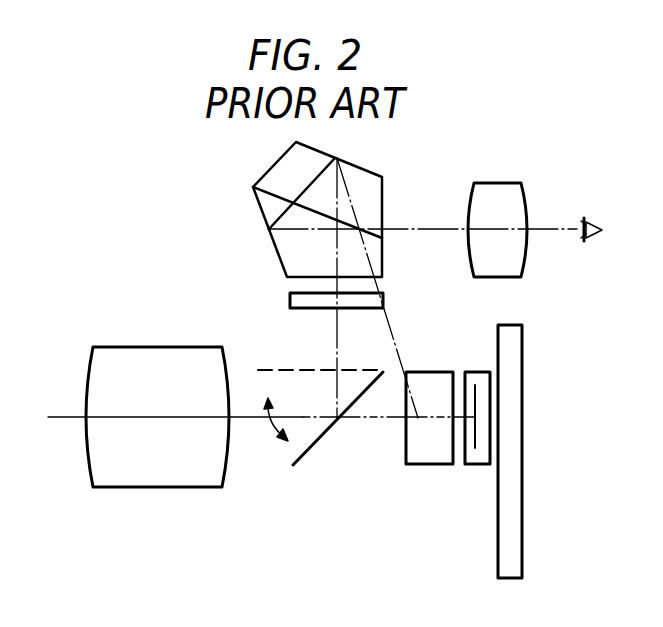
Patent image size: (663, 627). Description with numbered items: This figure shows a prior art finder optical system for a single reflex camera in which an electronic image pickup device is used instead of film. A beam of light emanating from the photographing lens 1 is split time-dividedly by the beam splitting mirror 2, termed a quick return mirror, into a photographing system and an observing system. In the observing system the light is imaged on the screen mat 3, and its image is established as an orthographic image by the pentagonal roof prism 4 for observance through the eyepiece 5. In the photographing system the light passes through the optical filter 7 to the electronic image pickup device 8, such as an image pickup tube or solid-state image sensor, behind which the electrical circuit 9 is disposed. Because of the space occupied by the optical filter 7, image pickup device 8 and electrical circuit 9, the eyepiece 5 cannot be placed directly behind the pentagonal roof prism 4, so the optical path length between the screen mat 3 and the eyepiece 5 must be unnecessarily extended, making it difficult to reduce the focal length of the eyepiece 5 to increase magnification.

The photographing lens 1 is at (90, 473).
The beam splitting mirror 2 is at (300, 458).
The screen mat 3 is at (290, 301).
The pentagonal roof prism 4 is at (363, 174).
The eyepiece 5 is at (507, 190).
The optical filter 7 is at (407, 450).
The electronic image pickup device 8 is at (465, 457).
The electrical circuit 9 is at (520, 550).